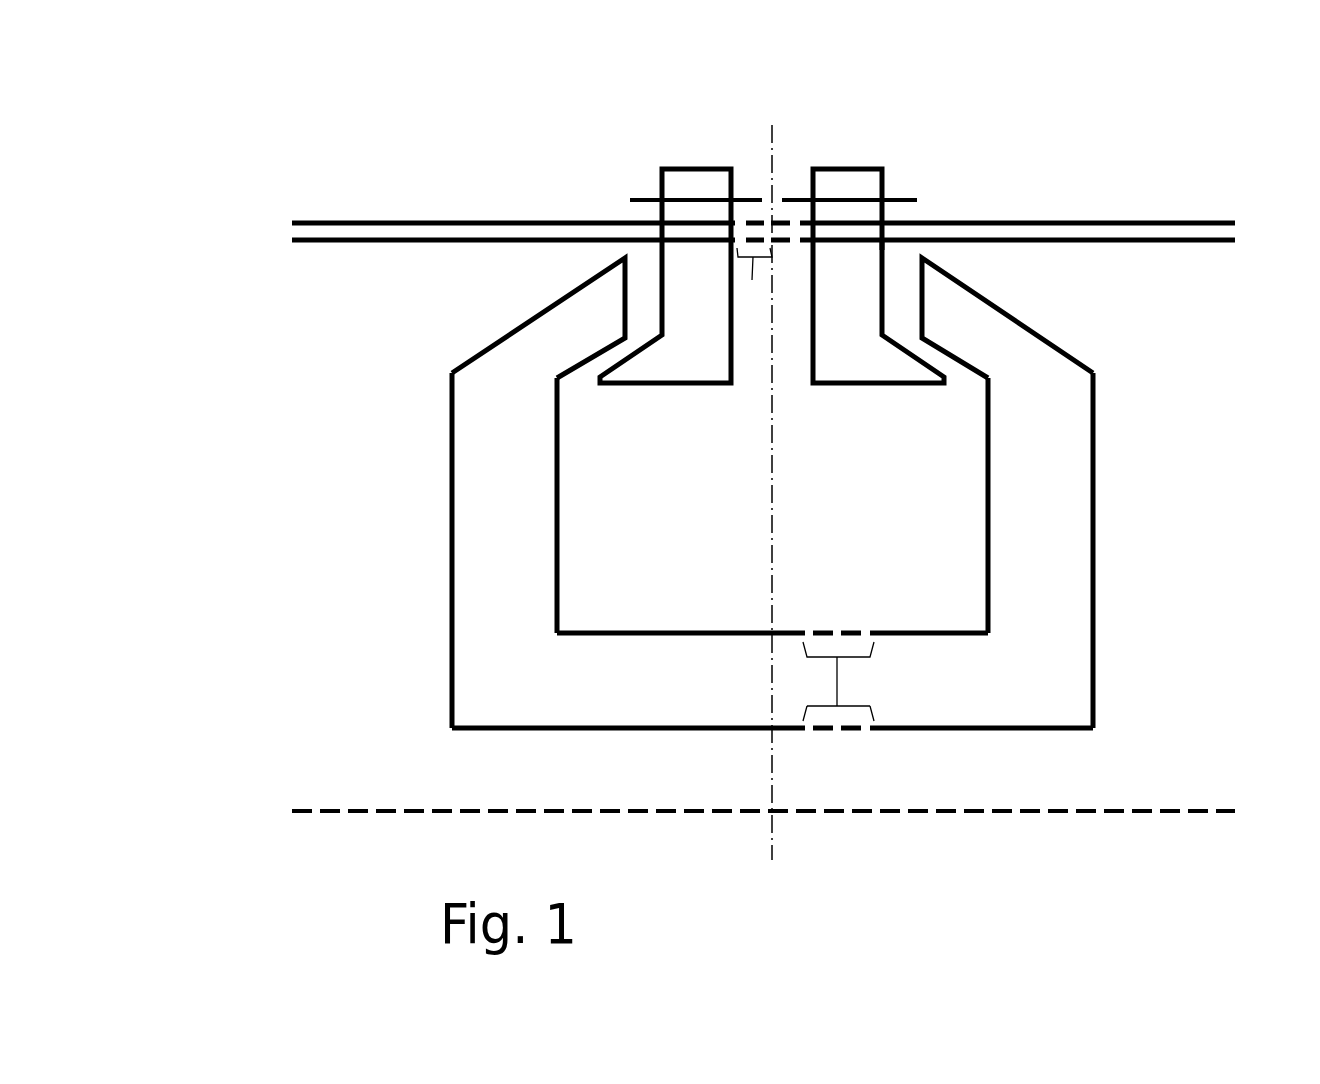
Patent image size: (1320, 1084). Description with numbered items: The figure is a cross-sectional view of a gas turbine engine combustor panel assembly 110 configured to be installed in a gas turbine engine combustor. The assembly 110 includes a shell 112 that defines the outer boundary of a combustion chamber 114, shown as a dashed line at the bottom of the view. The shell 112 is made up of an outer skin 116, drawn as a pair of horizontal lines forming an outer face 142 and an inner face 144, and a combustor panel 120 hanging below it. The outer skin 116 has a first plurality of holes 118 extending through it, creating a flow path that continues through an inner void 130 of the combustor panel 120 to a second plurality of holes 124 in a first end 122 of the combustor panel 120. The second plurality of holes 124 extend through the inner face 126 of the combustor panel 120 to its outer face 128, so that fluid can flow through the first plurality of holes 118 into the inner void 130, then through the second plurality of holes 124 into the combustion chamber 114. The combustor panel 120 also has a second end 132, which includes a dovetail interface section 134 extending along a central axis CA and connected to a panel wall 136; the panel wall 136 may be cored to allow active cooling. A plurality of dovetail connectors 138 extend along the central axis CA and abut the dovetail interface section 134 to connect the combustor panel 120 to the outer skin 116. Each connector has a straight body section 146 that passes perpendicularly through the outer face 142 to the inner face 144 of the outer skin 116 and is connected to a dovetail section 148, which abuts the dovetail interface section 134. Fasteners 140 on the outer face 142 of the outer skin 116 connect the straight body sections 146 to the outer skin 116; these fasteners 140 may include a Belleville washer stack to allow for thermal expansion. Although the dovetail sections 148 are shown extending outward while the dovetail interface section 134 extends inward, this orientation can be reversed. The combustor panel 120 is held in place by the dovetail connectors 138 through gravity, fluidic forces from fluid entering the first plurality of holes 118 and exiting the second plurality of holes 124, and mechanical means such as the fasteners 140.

The gas turbine engine combustor panel assembly 110 is at (194, 144).
The shell 112 is at (1163, 273).
The combustion chamber 114 is at (1203, 808).
The outer skin 116 is at (763, 219).
The first plurality of holes 118 is at (754, 278).
The combustor panel 120 is at (759, 526).
The first end 122 is at (436, 719).
The second plurality of holes 124 is at (837, 680).
The inner face 126 is at (636, 627).
The outer face 128 is at (943, 733).
The inner void 130 is at (772, 505).
The second end 132 is at (506, 321).
The dovetail interface section 134 is at (1040, 335).
The panel wall 136 is at (1098, 513).
The plurality of dovetail connectors 138 is at (772, 315).
The fasteners 140 is at (917, 200).
The outer face of outer skin 142 is at (338, 221).
The inner face of outer skin 144 is at (328, 243).
The straight body section 146 is at (887, 250).
The dovetail section 148 is at (910, 370).
The central axis CA is at (772, 130).